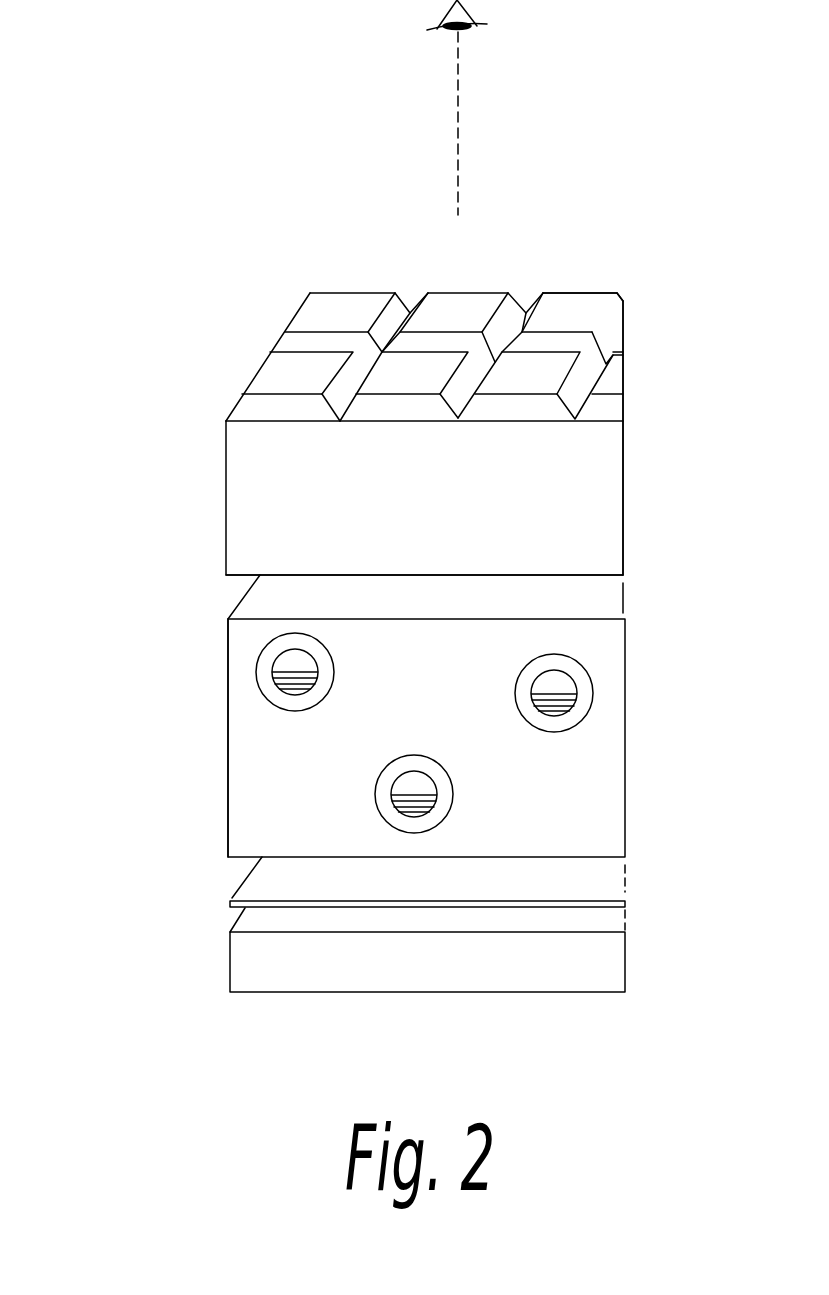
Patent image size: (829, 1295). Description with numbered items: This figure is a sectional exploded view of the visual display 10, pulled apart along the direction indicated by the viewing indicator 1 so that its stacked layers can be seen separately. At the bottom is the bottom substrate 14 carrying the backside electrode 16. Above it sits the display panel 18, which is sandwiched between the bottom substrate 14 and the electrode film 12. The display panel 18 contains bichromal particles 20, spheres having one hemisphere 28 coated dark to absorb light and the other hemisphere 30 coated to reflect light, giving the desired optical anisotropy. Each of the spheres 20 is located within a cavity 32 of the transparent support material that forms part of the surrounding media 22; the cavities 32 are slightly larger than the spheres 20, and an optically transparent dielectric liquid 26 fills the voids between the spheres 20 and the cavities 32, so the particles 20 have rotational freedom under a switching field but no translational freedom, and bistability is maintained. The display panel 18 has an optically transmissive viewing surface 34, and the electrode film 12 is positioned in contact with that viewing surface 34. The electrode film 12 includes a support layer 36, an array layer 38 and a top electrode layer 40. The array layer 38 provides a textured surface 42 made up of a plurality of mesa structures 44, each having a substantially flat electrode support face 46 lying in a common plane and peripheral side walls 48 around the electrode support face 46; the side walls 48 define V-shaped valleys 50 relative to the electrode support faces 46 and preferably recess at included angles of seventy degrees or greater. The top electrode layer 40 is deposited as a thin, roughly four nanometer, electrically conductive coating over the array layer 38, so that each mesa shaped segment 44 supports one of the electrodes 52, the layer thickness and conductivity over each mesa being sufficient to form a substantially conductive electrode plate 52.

The viewing direction indicator 1 is at (470, 14).
The visual display 10 is at (107, 215).
The electrode film 12 is at (176, 446).
The bottom substrate 14 is at (625, 967).
The backside electrode 16 is at (625, 903).
The display panel 18 is at (200, 750).
The bichromal particles 20 is at (270, 664).
The surrounding media 22 is at (237, 817).
The dielectric fluid 26 is at (590, 680).
The one hemisphere 28 is at (568, 712).
The other hemisphere 30 is at (563, 668).
The cavity 32 is at (453, 807).
The viewing surface 34 is at (248, 612).
The support layer 36 is at (608, 487).
The array layer 38 is at (636, 402).
The top electrode layer 40 is at (285, 360).
The textured surface 42 is at (588, 280).
The mesa structure 44 is at (253, 378).
The electrode support face 46 is at (322, 307).
The peripheral side walls 48 is at (402, 306).
The valleys 50 is at (519, 308).
The electrodes 52 is at (350, 307).